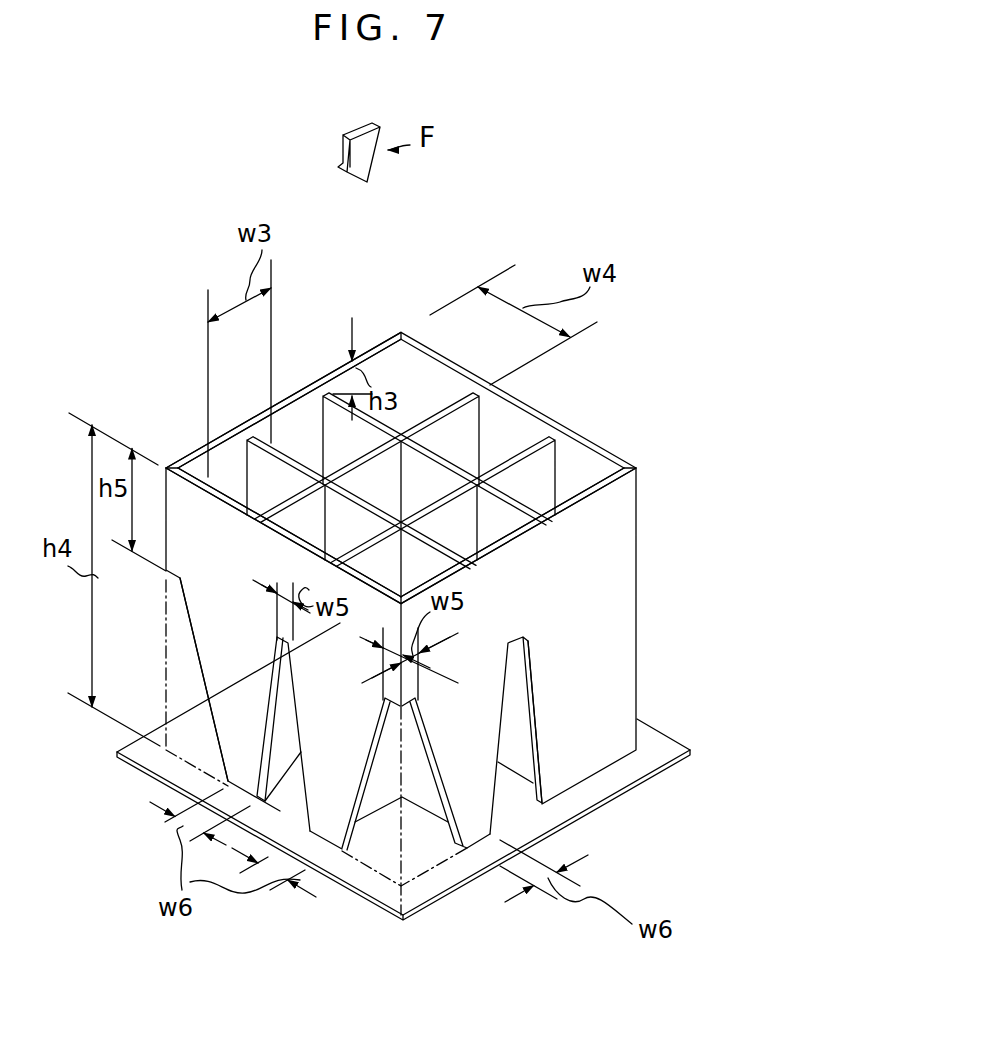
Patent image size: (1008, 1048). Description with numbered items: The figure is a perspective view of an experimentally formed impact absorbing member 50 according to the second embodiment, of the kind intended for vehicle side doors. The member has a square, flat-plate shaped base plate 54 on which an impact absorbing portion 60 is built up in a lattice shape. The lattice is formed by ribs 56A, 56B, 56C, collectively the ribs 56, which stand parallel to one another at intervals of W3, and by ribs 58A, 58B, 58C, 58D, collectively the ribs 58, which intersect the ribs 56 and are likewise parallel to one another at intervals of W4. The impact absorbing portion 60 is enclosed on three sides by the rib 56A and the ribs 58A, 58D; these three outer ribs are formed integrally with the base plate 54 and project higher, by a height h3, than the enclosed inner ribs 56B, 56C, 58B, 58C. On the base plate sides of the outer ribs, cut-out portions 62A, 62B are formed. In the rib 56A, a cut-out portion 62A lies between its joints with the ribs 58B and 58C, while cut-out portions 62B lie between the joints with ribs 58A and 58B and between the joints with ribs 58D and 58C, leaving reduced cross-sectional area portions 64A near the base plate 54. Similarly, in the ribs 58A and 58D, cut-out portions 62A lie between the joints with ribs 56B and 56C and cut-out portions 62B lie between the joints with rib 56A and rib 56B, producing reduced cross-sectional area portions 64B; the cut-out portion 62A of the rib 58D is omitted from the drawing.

The impact absorbing member 50 is at (531, 236).
The base plate 54 is at (603, 787).
The ribs 56 is at (434, 639).
The rib 56A is at (300, 556).
The rib 56B is at (363, 517).
The rib 56C is at (437, 480).
The ribs 58 is at (479, 584).
The rib 58A is at (625, 492).
The rib 58B is at (552, 466).
The rib 58C is at (488, 413).
The rib 58D is at (393, 362).
The impact absorbing portion 60 is at (160, 640).
The cut-out portion 62A is at (299, 727).
The cut-out portion 62B is at (201, 672).
The reduced cross-sectional area portion 64A is at (328, 807).
The reduced cross-sectional area portion 64B is at (483, 767).